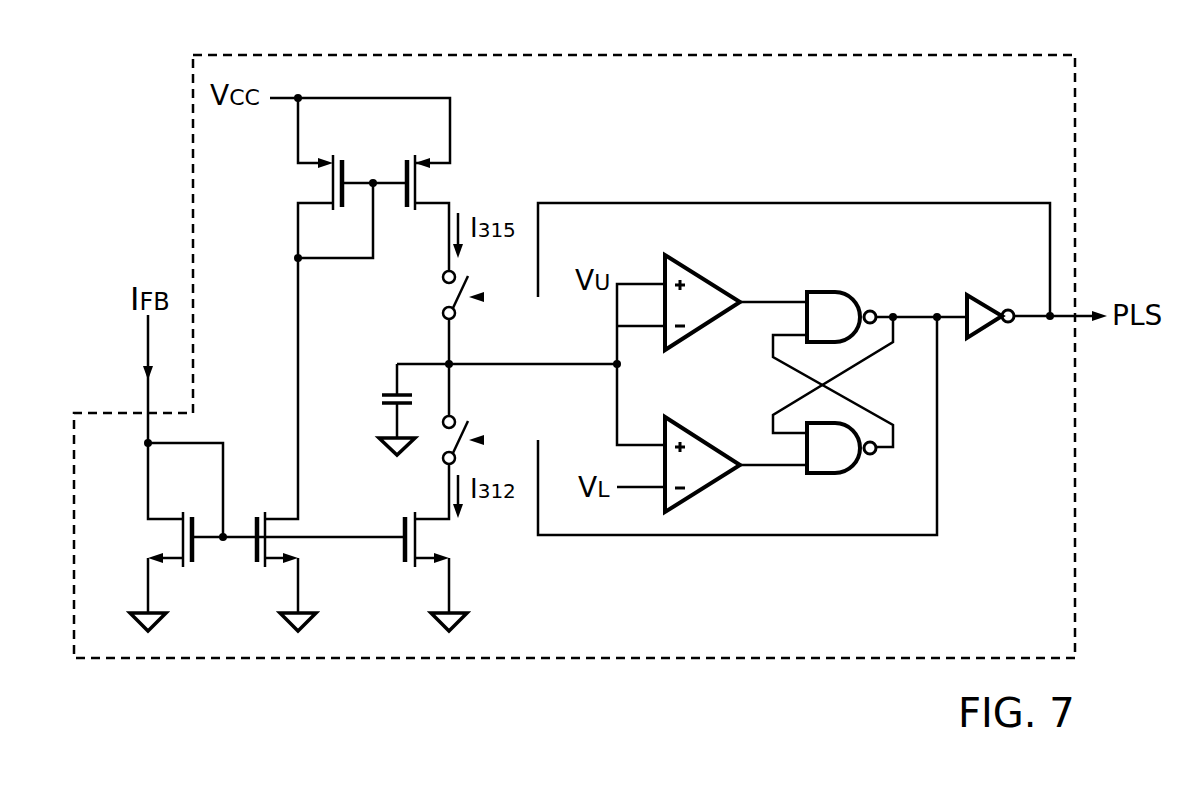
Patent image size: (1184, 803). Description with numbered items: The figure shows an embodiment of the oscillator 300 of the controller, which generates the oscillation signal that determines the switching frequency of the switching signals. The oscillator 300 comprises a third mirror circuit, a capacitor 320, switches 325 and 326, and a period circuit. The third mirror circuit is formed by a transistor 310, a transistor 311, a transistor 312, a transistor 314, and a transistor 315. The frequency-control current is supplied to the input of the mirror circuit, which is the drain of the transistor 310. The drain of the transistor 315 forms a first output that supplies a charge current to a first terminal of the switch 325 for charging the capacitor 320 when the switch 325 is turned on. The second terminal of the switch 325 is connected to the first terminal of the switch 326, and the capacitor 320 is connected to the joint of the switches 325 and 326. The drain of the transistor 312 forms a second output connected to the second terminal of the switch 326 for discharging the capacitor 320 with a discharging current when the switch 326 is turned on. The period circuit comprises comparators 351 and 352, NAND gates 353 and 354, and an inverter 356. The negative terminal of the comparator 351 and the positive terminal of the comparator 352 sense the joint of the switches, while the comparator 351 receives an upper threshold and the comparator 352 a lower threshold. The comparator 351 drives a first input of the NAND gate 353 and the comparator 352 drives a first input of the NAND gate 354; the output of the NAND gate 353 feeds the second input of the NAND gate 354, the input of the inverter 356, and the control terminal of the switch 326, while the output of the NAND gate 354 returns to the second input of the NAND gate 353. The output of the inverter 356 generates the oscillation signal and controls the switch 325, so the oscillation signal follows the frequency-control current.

The oscillator 300 is at (1005, 53).
The transistor 310 is at (143, 541).
The transistor 311 is at (278, 570).
The transistor 312 is at (427, 570).
The transistor 314 is at (293, 190).
The transistor 315 is at (453, 190).
The capacitor 320 is at (378, 402).
The switch 325 is at (440, 298).
The switch 326 is at (463, 412).
The comparator 351 is at (707, 272).
The comparator 352 is at (705, 495).
The NAND gate 353 is at (830, 290).
The NAND gate 354 is at (830, 475).
The inverter 356 is at (985, 335).